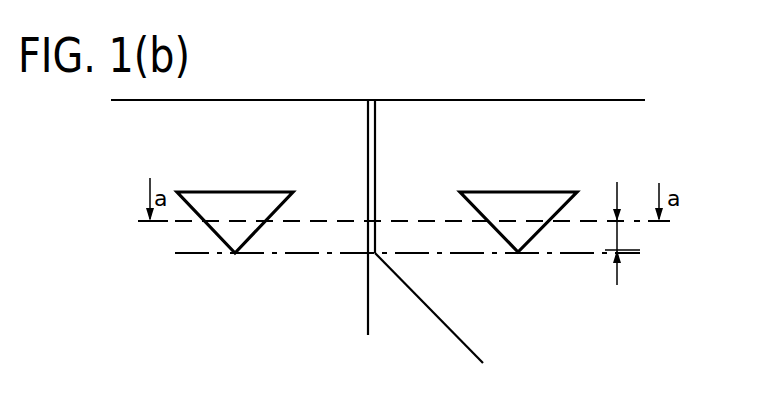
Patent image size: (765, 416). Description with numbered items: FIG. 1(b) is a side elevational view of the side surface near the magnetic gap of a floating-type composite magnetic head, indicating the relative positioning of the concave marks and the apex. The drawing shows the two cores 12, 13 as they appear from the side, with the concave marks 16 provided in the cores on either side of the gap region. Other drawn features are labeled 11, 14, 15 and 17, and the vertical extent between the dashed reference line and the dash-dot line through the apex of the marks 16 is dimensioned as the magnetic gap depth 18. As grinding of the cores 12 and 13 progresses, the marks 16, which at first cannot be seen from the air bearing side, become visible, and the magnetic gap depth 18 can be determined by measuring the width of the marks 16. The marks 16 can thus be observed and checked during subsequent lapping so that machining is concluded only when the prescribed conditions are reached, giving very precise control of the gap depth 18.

The optical semiconductor device 11 is at (613, 75).
The core 12 is at (590, 146).
The core 13 is at (198, 137).
The groove 14 is at (370, 100).
The cleavage line 15 is at (375, 252).
The mark 16 is at (243, 197).
The groove apex 17 is at (235, 253).
The magnetic gap depth 18 is at (617, 236).